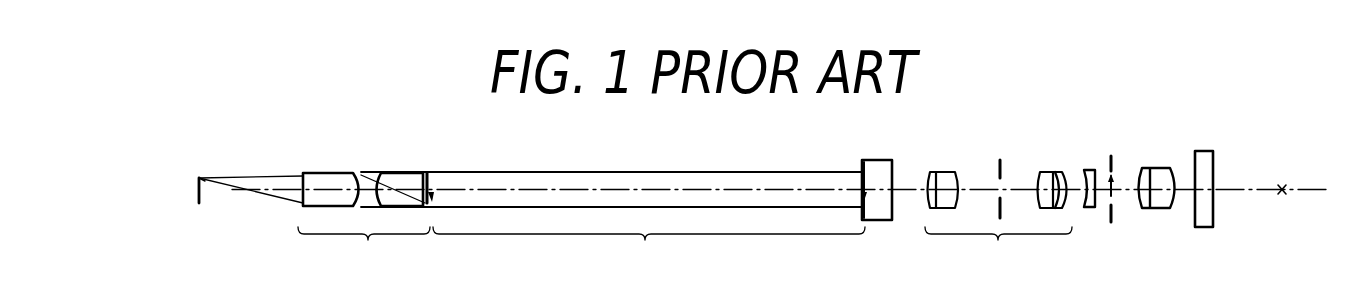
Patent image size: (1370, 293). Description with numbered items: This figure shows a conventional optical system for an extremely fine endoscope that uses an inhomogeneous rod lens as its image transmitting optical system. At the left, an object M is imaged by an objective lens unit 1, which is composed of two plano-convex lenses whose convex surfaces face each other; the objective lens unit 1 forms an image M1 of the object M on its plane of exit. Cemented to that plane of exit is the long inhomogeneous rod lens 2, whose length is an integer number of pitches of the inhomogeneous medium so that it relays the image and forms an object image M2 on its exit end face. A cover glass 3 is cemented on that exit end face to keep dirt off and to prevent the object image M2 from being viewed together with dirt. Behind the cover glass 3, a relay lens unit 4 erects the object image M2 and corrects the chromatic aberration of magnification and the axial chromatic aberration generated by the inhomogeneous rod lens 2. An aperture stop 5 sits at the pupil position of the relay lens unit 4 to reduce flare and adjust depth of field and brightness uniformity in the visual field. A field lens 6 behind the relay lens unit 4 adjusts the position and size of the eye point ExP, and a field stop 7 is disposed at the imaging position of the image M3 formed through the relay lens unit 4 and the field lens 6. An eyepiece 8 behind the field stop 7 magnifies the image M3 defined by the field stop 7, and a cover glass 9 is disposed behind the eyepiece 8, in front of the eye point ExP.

The objective lens unit 1 is at (364, 222).
The inhomogeneous rod lens 2 is at (613, 222).
The cover glass 3 is at (877, 160).
The relay lens unit 4 is at (998, 222).
The aperture stop 5 is at (1000, 160).
The field lens 6 is at (1087, 170).
The field stop 7 is at (1110, 156).
The eyepiece 8 is at (1160, 168).
The cover glass 9 is at (1203, 151).
The object M is at (245, 167).
The image of object M1 is at (427, 167).
The object image M2 is at (859, 174).
The image M3 is at (1114, 190).
The eye point ExP is at (1277, 176).